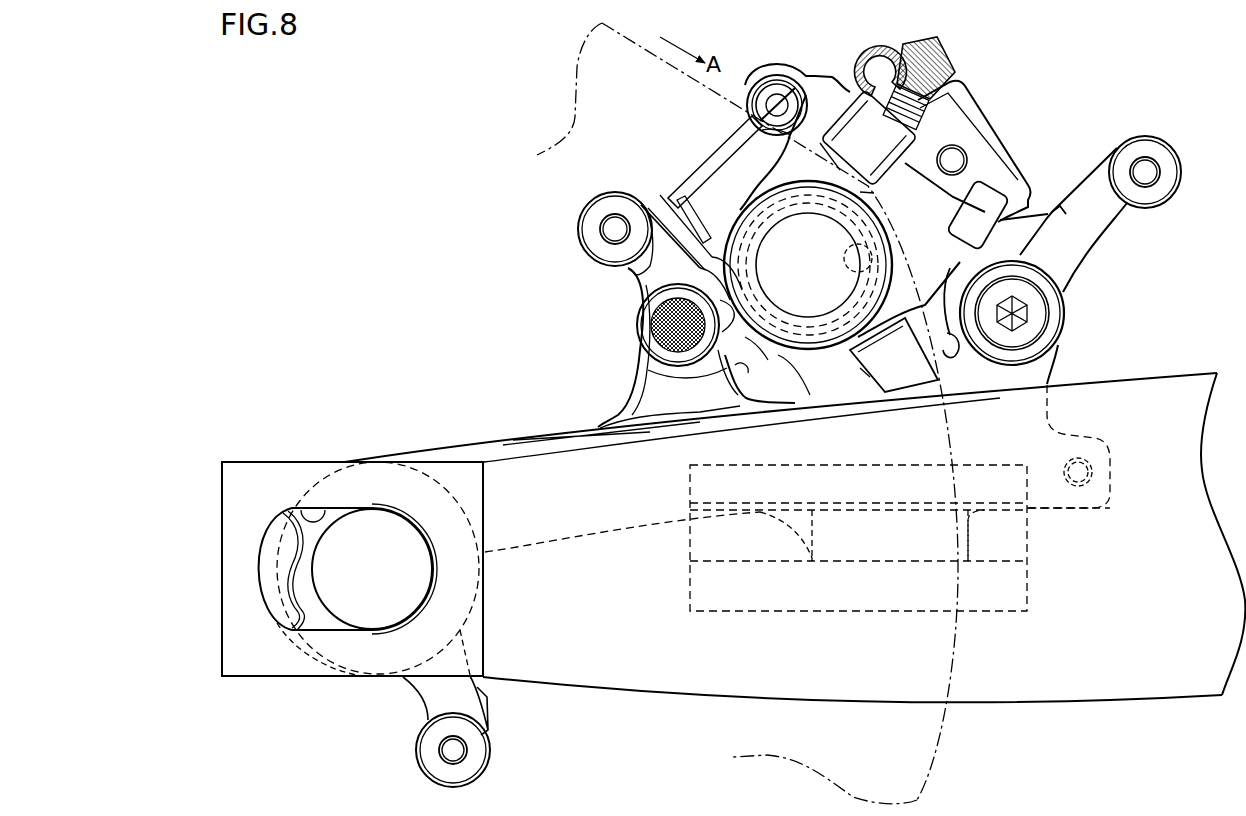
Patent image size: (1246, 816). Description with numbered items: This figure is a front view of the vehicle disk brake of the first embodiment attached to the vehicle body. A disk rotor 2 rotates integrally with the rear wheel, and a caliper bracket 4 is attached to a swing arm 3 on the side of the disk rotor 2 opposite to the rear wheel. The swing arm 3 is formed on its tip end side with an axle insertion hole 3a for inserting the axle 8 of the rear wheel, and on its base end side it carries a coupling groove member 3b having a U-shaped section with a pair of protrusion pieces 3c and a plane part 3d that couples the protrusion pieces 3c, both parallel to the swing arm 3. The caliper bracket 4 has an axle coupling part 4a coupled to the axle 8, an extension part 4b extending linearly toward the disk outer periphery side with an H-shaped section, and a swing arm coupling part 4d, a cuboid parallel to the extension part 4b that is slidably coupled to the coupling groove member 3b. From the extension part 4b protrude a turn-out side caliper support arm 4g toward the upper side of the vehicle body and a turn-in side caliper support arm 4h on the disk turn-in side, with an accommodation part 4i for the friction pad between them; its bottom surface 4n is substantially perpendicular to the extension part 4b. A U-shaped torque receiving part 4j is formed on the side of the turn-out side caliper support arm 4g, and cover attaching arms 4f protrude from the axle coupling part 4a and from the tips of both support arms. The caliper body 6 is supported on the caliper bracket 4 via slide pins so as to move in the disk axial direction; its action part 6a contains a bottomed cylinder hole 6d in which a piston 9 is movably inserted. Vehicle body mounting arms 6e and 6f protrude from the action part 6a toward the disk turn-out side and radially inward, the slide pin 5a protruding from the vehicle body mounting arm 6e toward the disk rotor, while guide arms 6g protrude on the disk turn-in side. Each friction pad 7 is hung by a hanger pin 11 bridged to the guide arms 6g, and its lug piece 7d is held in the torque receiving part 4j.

The disk rotor 2 is at (935, 744).
The swing arm 3 is at (1074, 702).
The axle insertion hole 3a is at (328, 518).
The coupling groove member 3b is at (838, 613).
The protrusion piece 3c is at (975, 470).
The plane part 3d is at (1025, 530).
The caliper bracket 4 is at (633, 375).
The axle coupling part 4a is at (322, 650).
The extension part 4b is at (603, 520).
The swing arm coupling part 4d is at (893, 553).
The cover attaching arm 4f is at (642, 262).
The turn-out side caliper support arm 4g is at (1050, 370).
The turn-in side caliper support arm 4h is at (638, 383).
The accommodation part 4i is at (667, 210).
The torque receiving part 4j is at (955, 357).
The bottom surface 4n is at (745, 385).
The slide pin 5a is at (1047, 317).
The caliper body 6 is at (856, 86).
The action part 6a is at (736, 215).
The cylinder hole 6d is at (873, 257).
The vehicle body mounting arm 6e is at (1030, 243).
The vehicle body mounting arm 6f is at (745, 338).
The guide arm 6g is at (780, 145).
The friction pad 7 is at (698, 158).
The lug piece 7d is at (895, 392).
The axle 8 is at (372, 540).
The piston 9 is at (803, 205).
The hanger pin 11 is at (777, 88).